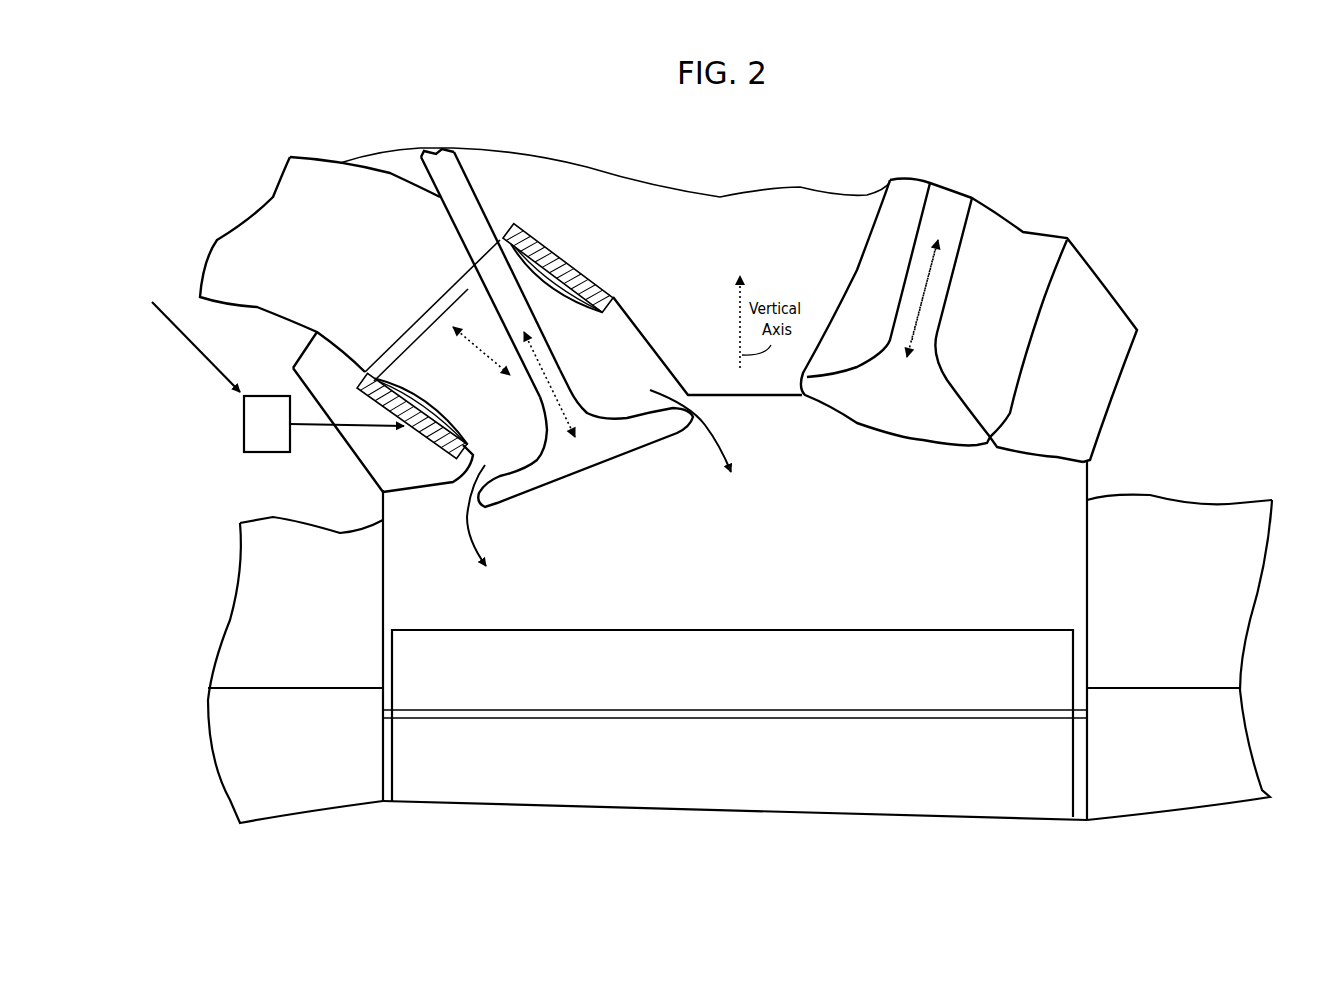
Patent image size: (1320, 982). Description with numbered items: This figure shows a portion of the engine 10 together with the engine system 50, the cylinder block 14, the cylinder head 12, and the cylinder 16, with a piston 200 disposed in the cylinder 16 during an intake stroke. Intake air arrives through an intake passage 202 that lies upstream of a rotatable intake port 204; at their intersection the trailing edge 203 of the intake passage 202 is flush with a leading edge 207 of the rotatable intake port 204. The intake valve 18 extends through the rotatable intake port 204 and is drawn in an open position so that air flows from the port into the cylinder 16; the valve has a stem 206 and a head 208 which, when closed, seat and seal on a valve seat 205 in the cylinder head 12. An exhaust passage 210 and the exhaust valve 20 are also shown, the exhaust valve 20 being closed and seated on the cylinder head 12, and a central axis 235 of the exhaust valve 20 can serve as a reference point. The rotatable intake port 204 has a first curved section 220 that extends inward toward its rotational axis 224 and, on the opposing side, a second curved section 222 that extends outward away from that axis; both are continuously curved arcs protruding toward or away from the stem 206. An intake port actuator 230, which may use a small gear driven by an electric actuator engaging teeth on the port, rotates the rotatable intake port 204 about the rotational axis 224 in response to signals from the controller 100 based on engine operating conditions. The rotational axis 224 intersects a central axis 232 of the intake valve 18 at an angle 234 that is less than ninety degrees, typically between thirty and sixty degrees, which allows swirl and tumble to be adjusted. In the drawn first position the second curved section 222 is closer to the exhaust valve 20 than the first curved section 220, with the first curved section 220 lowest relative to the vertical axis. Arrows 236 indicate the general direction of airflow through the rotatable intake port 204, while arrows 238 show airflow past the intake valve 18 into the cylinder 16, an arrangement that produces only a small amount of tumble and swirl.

The engine 10 is at (1168, 306).
The cylinder head 12 is at (299, 640).
The cylinder block 14 is at (299, 759).
The cylinder 16 is at (743, 543).
The intake valve 18 is at (492, 216).
The exhaust valve 20 is at (943, 268).
The engine system 50 is at (173, 377).
The controller 100 is at (164, 325).
The piston 200 is at (720, 680).
The intake passage 202 is at (376, 250).
The trailing edge 203 is at (453, 297).
The rotatable intake port 204 is at (458, 289).
The valve seat 205 is at (470, 455).
The stem 206 is at (491, 304).
The leading edge 207 is at (462, 282).
The head 208 is at (550, 471).
The exhaust passage 210 is at (972, 372).
The first curved section 220 is at (472, 420).
The second curved section 222 is at (584, 304).
The rotational axis 224 is at (492, 344).
The intake port actuator 230 is at (288, 453).
The central axis 232 is at (560, 410).
The angle 234 is at (545, 390).
The central axis 235 is at (923, 293).
The arrows 236 is at (400, 375).
The arrows 238 is at (478, 551).